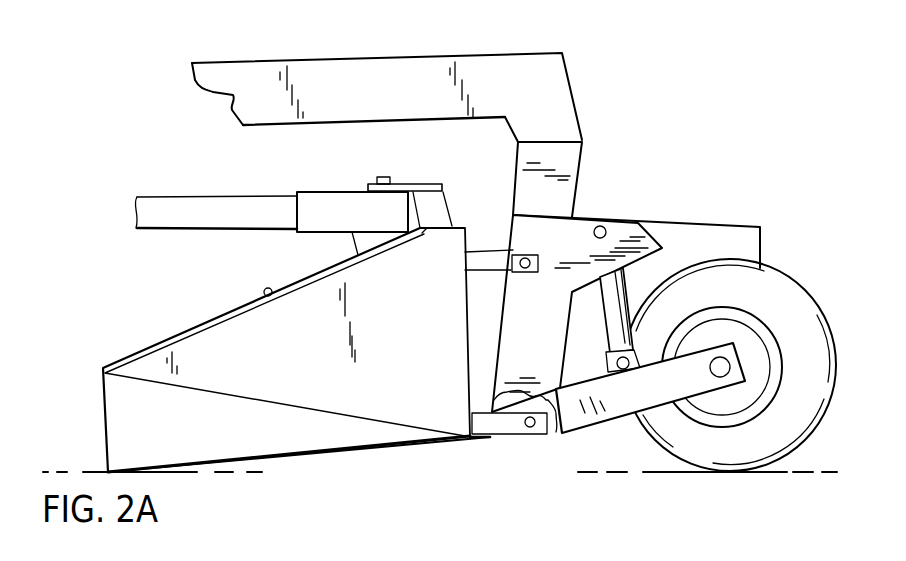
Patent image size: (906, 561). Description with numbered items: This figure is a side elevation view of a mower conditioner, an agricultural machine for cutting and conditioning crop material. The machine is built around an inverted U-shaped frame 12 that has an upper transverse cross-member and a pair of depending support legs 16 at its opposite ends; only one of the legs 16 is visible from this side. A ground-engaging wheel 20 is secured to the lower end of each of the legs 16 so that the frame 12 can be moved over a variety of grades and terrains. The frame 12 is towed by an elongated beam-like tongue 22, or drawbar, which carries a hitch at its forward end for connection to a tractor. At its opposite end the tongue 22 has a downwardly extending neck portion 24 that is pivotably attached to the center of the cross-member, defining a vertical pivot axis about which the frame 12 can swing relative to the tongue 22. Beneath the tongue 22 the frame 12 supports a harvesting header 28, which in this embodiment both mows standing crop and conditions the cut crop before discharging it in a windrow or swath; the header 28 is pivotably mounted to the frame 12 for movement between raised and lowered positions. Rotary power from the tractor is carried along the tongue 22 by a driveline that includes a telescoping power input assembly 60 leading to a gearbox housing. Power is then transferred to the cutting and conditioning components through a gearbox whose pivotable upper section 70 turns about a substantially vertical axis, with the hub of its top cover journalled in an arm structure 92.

The frame 12 is at (621, 191).
The support leg 16 is at (548, 393).
The ground-engaging wheel 20 is at (821, 286).
The tongue 22 is at (270, 120).
The neck portion 24 is at (553, 83).
The harvesting header 28 is at (126, 337).
The telescoping power input assembly 60 is at (156, 188).
The pivotable upper section 70 is at (333, 248).
The arm structure 92 is at (414, 176).